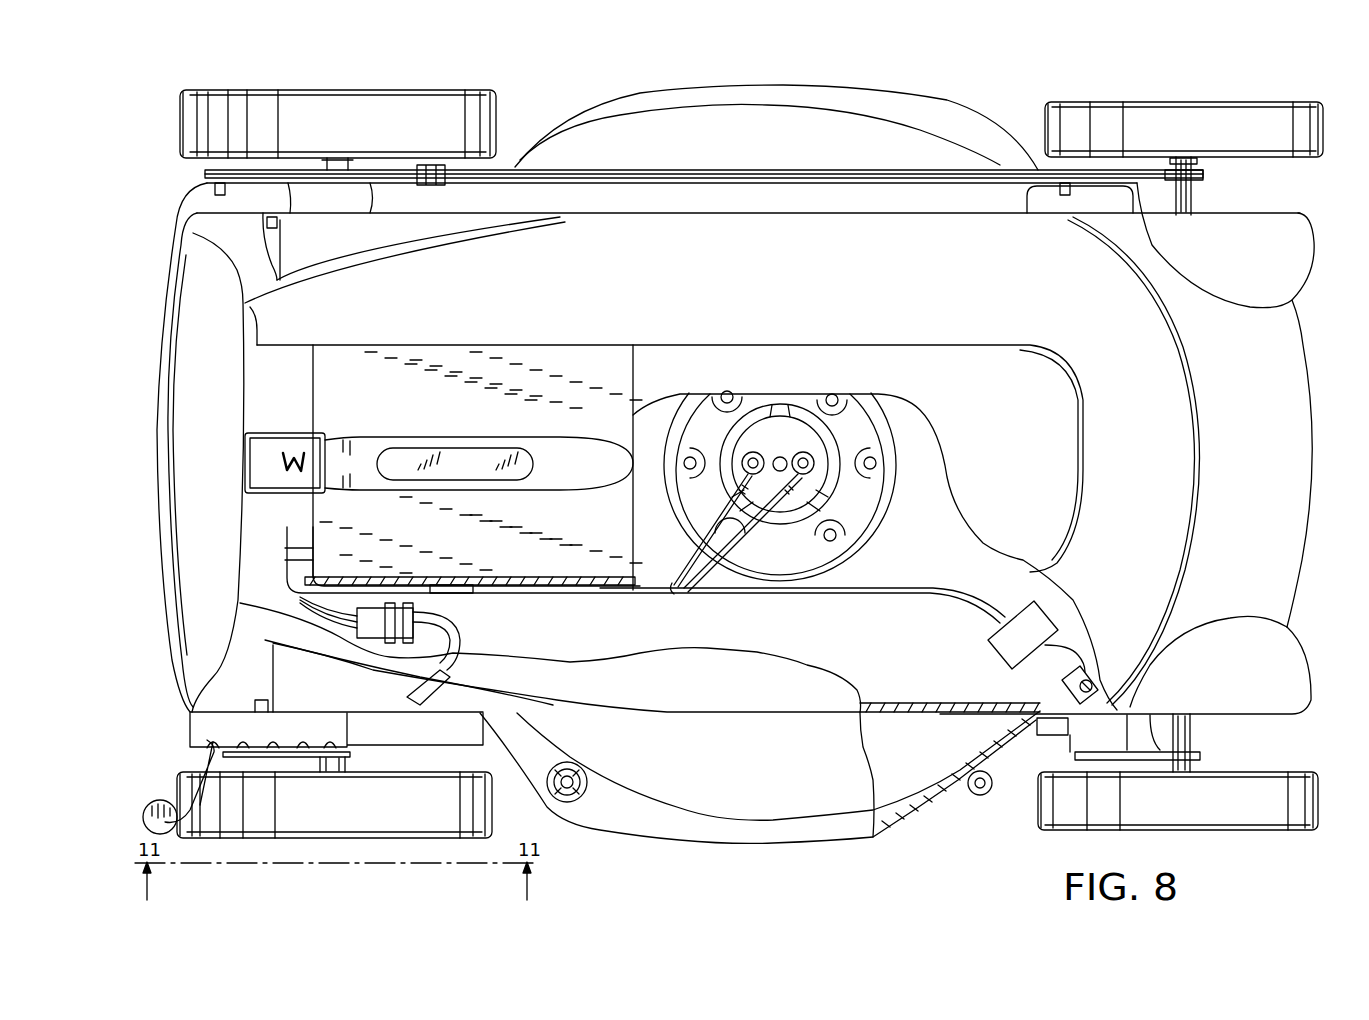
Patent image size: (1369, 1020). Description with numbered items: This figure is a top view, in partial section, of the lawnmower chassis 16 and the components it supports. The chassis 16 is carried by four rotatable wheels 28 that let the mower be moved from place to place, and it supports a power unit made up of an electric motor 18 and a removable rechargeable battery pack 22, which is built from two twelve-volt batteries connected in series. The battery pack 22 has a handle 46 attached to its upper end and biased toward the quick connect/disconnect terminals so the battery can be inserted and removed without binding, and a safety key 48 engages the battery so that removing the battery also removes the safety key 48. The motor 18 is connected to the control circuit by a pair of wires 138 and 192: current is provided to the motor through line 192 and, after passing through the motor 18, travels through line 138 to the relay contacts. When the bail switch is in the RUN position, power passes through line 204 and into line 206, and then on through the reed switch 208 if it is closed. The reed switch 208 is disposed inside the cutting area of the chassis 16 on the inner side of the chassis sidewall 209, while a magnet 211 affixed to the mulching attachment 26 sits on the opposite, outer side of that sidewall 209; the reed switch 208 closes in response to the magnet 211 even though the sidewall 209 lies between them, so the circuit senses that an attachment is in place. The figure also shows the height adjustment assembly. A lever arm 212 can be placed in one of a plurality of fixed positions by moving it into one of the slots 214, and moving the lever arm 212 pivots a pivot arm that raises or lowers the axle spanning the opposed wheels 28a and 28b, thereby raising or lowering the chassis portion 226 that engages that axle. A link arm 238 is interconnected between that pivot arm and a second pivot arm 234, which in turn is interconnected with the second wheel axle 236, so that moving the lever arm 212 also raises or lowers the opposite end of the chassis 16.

The lawnmower chassis 16 is at (1312, 392).
The electric motor 18 is at (863, 428).
The removable rechargeable battery pack 22 is at (535, 378).
The mulching attachment 26 is at (722, 803).
The rotatable wheels 28 is at (1220, 107).
The wheel 28a is at (433, 814).
The wheel 28b is at (465, 94).
The handle 46 is at (357, 450).
The safety key 48 is at (268, 450).
The wire 138 is at (765, 497).
The wire 192 is at (727, 507).
The line 204 is at (338, 617).
The line 206 is at (453, 637).
The reed switch 208 is at (1058, 692).
The chassis sidewall 209 is at (907, 700).
The magnet 211 is at (1050, 728).
The lever arm 212 is at (170, 800).
The slots 214 is at (322, 730).
The chassis portion 226 is at (402, 737).
The pivot arm 234 is at (1150, 183).
The second wheel axle 236 is at (1193, 202).
The link arm 238 is at (730, 172).